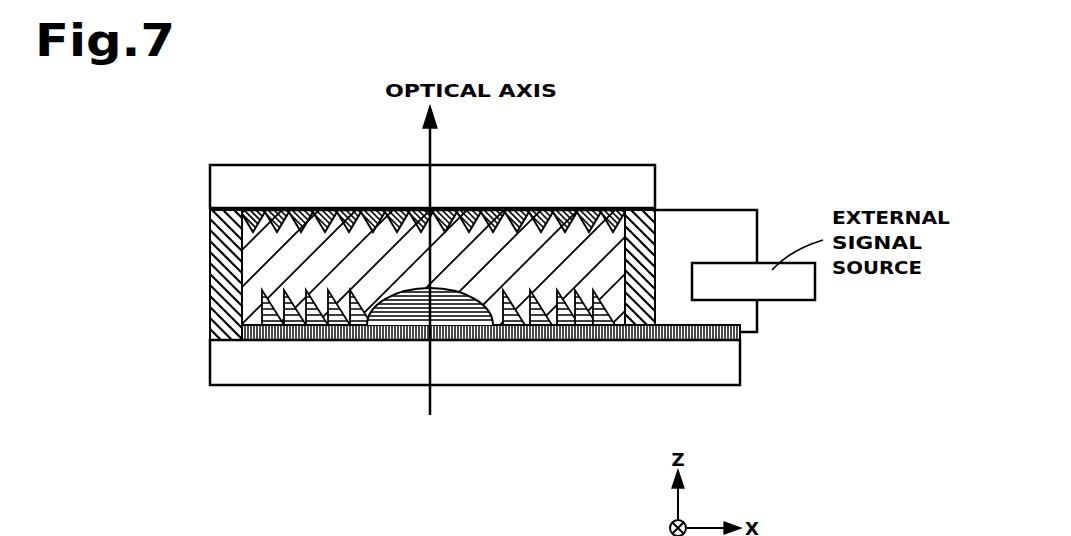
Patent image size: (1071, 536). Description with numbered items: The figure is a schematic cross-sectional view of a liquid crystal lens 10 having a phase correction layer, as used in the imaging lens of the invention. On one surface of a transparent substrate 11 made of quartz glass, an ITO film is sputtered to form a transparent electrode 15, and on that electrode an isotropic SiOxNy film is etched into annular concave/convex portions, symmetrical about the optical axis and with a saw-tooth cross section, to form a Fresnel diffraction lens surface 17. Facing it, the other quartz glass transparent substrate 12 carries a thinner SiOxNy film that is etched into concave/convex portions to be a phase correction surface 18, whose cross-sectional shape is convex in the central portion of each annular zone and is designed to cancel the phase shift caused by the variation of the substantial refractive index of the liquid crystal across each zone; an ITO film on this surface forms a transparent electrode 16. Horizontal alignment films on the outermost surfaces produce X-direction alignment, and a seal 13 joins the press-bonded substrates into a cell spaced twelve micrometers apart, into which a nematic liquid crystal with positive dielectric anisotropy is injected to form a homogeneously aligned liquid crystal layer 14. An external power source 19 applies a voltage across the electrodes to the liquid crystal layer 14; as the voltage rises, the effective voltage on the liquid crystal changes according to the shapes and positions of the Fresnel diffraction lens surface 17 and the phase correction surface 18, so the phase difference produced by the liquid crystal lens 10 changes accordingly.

The liquid crystal lens 10 is at (143, 92).
The transparent substrate 11 is at (243, 370).
The transparent substrate 12 is at (245, 188).
The seal 13 is at (212, 287).
The liquid crystal layer 14 is at (262, 260).
The transparent electrode 15 is at (384, 338).
The transparent electrode 16 is at (390, 208).
The Fresnel diffraction lens surface 17 is at (447, 310).
The phase correction surface 18 is at (337, 208).
The external power source 19 is at (760, 300).